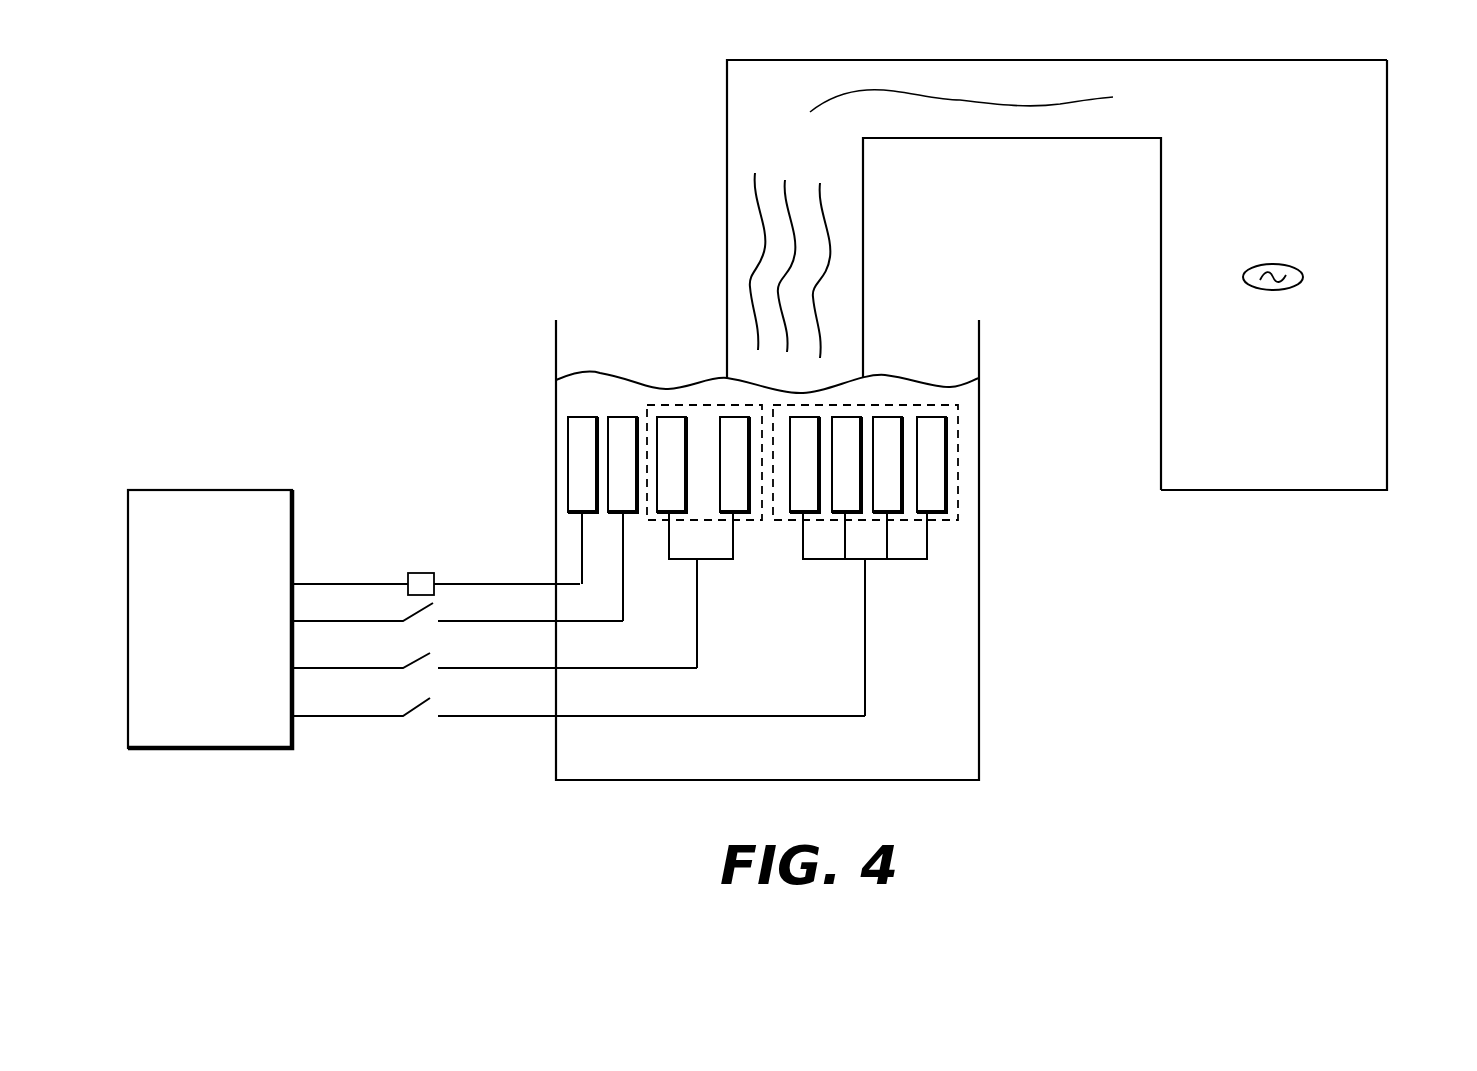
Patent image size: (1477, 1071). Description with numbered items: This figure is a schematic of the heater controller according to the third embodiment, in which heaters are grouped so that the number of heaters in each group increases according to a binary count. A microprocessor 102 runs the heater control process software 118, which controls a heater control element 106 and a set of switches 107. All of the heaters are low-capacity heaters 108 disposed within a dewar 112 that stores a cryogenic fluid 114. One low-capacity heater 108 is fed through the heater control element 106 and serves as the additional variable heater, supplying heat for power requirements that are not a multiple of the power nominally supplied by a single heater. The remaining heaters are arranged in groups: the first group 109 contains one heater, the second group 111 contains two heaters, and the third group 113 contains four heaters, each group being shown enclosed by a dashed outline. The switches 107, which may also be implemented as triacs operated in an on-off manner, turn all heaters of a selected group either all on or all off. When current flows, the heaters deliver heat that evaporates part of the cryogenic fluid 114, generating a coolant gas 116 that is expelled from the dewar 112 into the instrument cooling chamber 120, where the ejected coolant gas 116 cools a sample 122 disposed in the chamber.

The microprocessor 102 is at (235, 490).
The heater control element 106 is at (422, 573).
The switches 107 is at (420, 612).
The low-capacity heater 108 is at (582, 417).
The first group of heaters 109 is at (620, 417).
The second group of heaters 111 is at (698, 405).
The dewar 112 is at (980, 492).
The third group of heaters 113 is at (897, 405).
The cryogenic fluid 114 is at (943, 700).
The coolant gas 116 is at (822, 257).
The heater control process software 118 is at (1033, 138).
The instrument cooling chamber 120 is at (1384, 393).
The sample 122 is at (1294, 264).